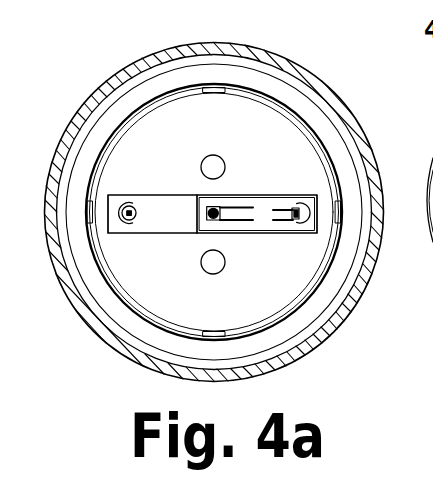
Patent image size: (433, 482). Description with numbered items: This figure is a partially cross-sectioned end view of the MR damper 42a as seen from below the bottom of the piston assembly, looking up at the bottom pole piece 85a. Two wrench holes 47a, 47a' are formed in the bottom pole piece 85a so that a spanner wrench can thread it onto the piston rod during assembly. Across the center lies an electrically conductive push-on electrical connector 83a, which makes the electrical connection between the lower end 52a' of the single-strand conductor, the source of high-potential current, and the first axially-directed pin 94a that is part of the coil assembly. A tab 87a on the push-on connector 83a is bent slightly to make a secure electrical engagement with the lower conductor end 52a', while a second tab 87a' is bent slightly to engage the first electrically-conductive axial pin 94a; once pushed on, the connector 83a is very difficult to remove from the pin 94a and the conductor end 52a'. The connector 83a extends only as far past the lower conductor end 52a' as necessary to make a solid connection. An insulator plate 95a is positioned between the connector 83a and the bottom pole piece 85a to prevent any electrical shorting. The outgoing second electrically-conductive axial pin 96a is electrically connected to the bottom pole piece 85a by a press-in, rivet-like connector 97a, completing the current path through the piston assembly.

The sensor assembly 42a is at (100, 99).
The wrench hole 47a is at (188, 89).
The wrench hole 47a' is at (140, 329).
The bottom pole piece 85a is at (240, 126).
The push-on electrical connector 83a is at (267, 233).
The insulator plate 95a is at (168, 222).
The second electrically-conductive axial pin 96a is at (130, 205).
The press-in rivet-like connector 97a is at (122, 218).
The tab 87a is at (234, 177).
The tab 87a' is at (345, 278).
The lower end of single-strand conductor 52a' is at (249, 258).
The first axially-directed pin 94a is at (296, 206).